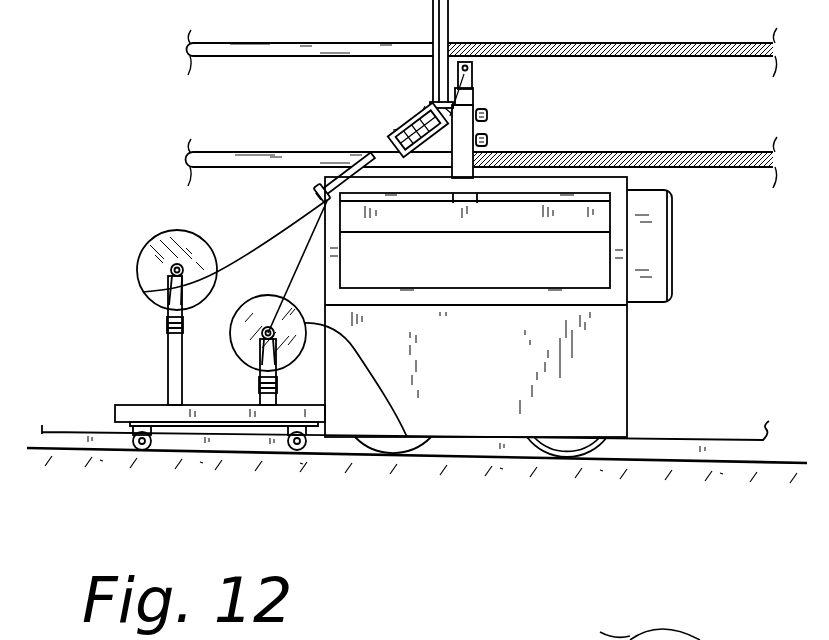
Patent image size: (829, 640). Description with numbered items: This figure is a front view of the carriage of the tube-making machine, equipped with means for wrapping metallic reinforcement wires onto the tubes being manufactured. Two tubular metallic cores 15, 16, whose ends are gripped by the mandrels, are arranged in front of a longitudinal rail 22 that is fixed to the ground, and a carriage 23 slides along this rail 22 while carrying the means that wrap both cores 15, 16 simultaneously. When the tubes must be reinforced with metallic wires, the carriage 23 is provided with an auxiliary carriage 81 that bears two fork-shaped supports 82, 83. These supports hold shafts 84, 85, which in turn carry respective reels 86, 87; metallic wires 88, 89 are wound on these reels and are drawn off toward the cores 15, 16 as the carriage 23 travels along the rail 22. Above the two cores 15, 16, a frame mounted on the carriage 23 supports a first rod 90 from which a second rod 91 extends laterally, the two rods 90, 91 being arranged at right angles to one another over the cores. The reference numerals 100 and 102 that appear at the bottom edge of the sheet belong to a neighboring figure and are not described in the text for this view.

The tubular metallic core 15 is at (238, 150).
The tubular metallic core 16 is at (224, 43).
The longitudinal rail 22 is at (663, 440).
The carriage 23 is at (556, 417).
The auxiliary carriage 81 is at (226, 415).
The fork-shaped support 82 is at (168, 380).
The fork-shaped support 83 is at (262, 396).
The shaft 84 is at (143, 292).
The shaft 85 is at (305, 345).
The reel 86 is at (142, 250).
The reel 87 is at (407, 437).
The metallic wire 88 is at (288, 229).
The metallic wire 89 is at (273, 267).
The first rod 90 is at (474, 97).
The second rod 91 is at (432, 80).
The fixture 100 is at (669, 632).
The clamp 102 is at (708, 639).